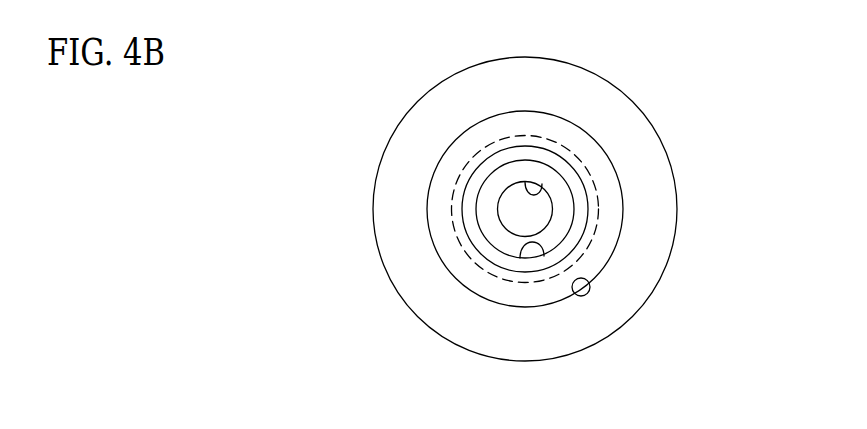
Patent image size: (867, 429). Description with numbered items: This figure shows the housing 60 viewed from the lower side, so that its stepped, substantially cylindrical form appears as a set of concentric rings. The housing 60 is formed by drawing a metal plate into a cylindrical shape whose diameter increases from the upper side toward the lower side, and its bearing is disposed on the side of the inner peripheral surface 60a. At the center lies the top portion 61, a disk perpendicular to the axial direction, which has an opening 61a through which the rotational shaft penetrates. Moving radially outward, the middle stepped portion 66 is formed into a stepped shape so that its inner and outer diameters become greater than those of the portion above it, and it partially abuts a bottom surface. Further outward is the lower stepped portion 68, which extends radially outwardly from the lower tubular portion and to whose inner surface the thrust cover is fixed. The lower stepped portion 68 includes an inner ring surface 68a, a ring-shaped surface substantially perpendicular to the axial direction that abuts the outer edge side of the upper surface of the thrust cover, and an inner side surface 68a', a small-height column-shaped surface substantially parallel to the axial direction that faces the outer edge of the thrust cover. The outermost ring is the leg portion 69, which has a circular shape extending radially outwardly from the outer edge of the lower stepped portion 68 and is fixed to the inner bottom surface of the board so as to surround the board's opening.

The housing 60 is at (598, 71).
The inner peripheral surface 60a is at (544, 256).
The top portion 61 is at (495, 181).
The opening 61a is at (542, 184).
The middle stepped portion 66 is at (478, 245).
The lower stepped portion 68 is at (608, 220).
The inner ring surface 68a is at (594, 209).
The inner side surface 68a' is at (606, 333).
The leg portion 69 is at (443, 308).